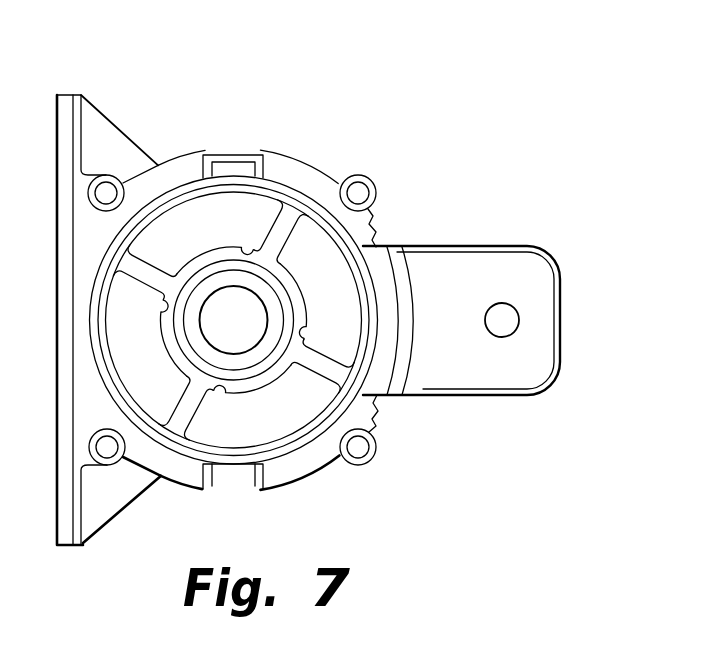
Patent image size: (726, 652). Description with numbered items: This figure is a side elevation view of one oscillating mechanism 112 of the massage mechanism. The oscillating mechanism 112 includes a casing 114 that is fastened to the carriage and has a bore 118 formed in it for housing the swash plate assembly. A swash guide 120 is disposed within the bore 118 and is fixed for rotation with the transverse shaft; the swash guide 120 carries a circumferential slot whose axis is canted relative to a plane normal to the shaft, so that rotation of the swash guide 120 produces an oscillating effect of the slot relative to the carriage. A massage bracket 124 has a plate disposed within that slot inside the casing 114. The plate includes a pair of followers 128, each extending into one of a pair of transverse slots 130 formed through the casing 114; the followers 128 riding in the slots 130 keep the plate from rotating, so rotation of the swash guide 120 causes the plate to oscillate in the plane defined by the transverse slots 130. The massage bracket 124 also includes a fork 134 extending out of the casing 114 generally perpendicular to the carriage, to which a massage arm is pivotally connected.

The oscillating mechanism 112 is at (343, 37).
The casing 114 is at (125, 130).
The bore 118 is at (330, 185).
The swash guide 120 is at (312, 237).
The massage bracket 124 is at (512, 236).
The follower 128 is at (236, 154).
The transverse slot 130 is at (262, 156).
The fork 134 is at (490, 397).